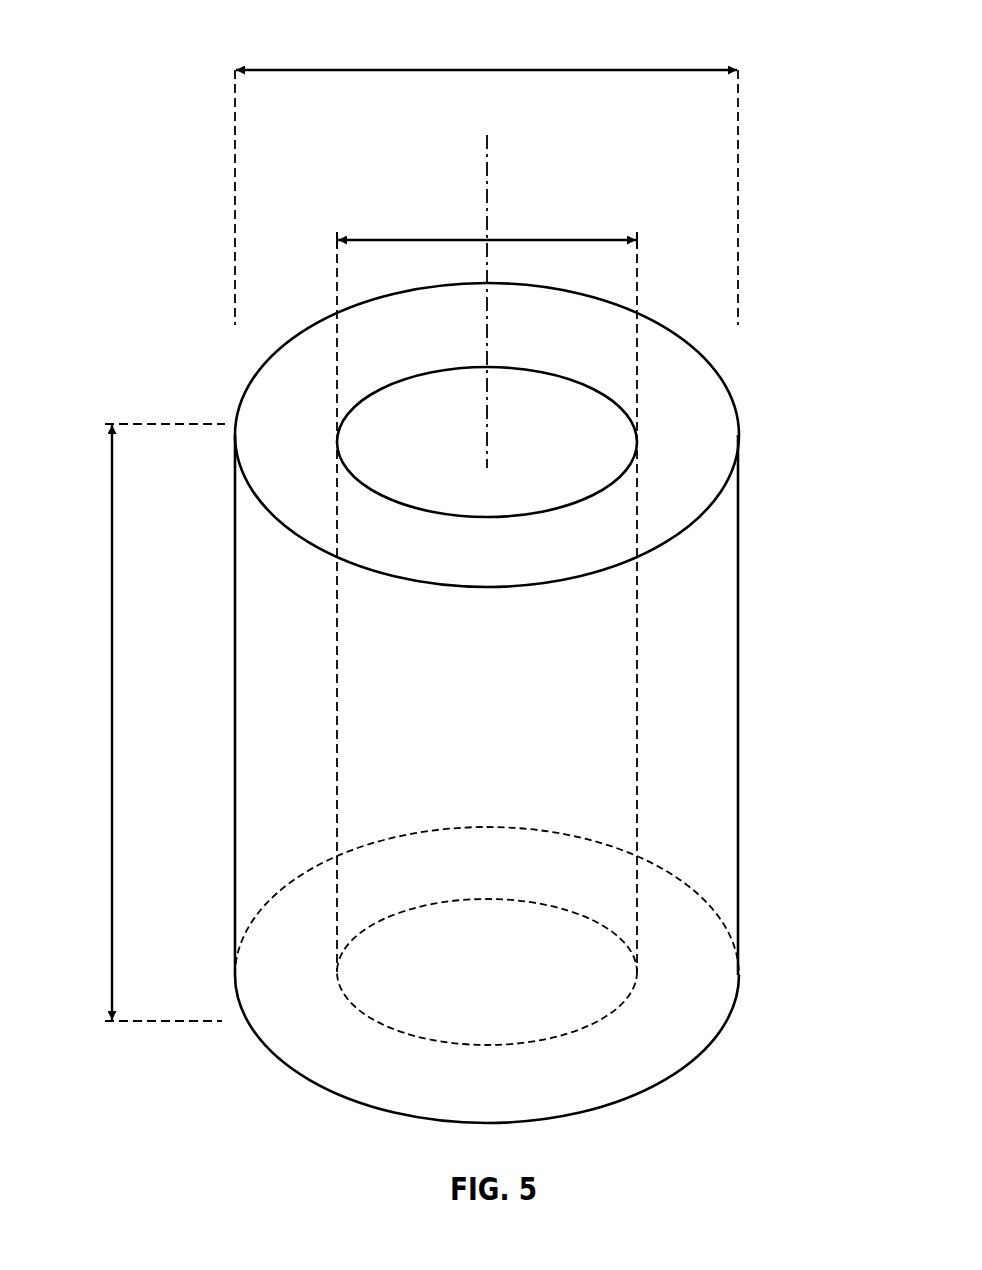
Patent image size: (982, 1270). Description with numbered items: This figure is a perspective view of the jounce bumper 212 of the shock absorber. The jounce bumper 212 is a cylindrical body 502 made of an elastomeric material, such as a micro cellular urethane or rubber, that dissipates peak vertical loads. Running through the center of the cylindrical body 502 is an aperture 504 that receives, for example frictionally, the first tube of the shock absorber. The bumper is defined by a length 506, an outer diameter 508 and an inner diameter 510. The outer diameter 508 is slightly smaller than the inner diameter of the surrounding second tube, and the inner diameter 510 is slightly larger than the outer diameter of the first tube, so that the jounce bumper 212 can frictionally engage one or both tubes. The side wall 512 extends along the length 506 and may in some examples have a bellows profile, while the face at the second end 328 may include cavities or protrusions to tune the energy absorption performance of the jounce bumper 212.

The jounce bumper 212 is at (212, 308).
The cylindrical body 502 is at (738, 643).
The aperture 504 is at (633, 418).
The length 506 is at (112, 713).
The outer diameter 508 is at (413, 70).
The inner diameter 510 is at (422, 240).
The side wall 512 is at (728, 797).
The second end 328 is at (683, 1028).